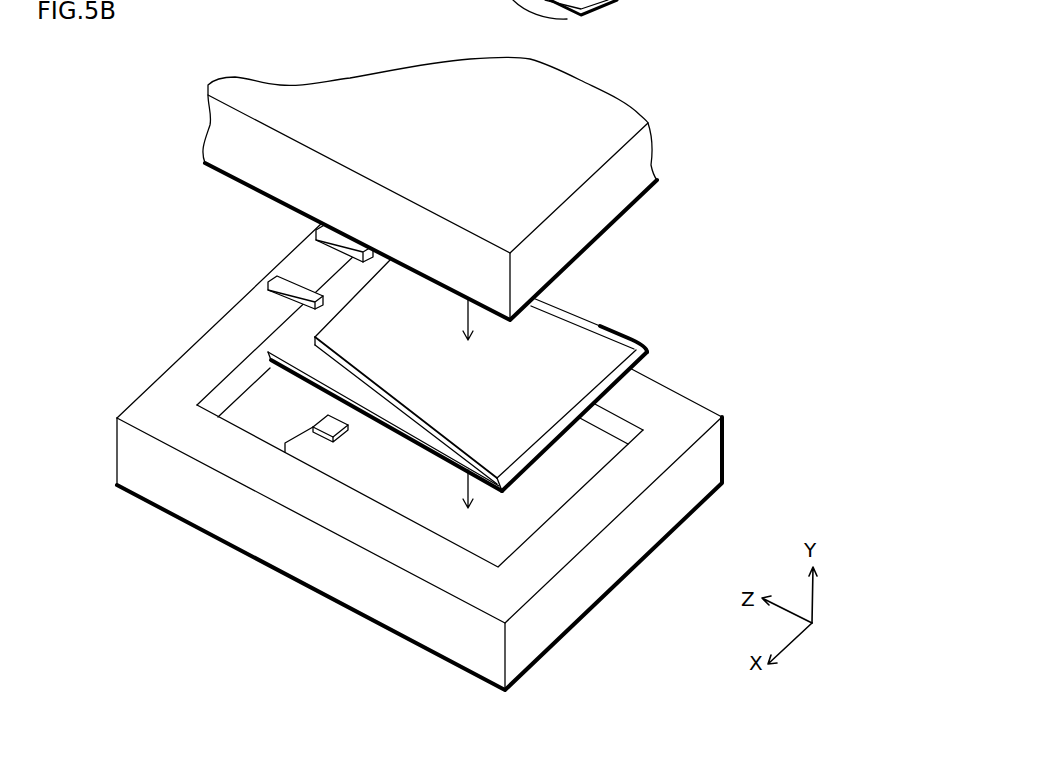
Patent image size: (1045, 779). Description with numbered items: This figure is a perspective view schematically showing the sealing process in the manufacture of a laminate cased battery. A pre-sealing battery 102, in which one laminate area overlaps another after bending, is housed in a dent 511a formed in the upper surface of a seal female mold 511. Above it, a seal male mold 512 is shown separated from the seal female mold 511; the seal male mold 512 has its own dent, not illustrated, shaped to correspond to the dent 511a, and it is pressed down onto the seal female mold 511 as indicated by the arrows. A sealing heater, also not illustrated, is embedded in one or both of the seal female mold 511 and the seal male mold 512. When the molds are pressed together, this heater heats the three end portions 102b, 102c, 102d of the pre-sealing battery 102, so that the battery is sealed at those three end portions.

The seal female mold 511 is at (466, 457).
The dent 511a is at (515, 532).
The seal male mold 512 is at (643, 164).
The pre-sealing battery 102 is at (403, 357).
The end portion 102b is at (343, 290).
The end portion 102c is at (561, 298).
The end portion 102d is at (340, 379).